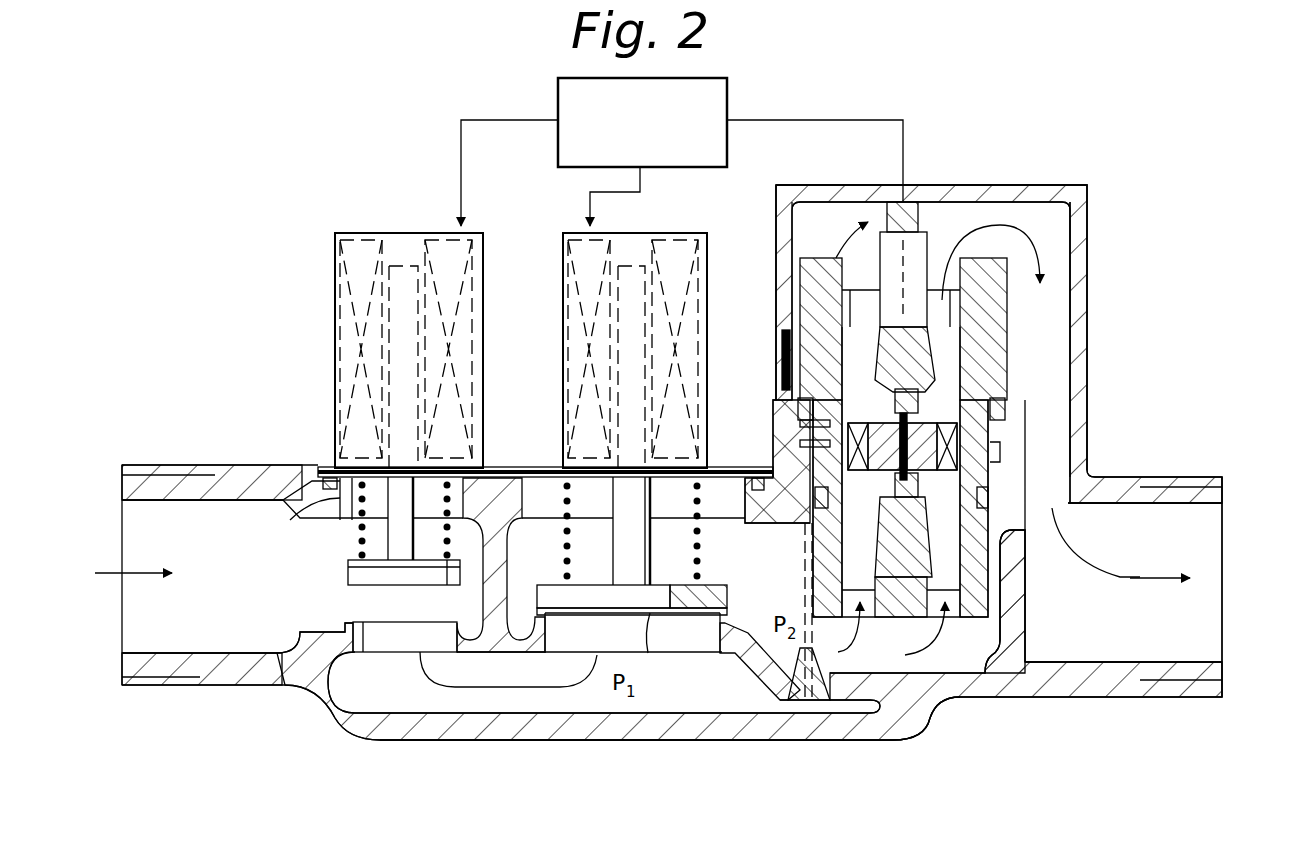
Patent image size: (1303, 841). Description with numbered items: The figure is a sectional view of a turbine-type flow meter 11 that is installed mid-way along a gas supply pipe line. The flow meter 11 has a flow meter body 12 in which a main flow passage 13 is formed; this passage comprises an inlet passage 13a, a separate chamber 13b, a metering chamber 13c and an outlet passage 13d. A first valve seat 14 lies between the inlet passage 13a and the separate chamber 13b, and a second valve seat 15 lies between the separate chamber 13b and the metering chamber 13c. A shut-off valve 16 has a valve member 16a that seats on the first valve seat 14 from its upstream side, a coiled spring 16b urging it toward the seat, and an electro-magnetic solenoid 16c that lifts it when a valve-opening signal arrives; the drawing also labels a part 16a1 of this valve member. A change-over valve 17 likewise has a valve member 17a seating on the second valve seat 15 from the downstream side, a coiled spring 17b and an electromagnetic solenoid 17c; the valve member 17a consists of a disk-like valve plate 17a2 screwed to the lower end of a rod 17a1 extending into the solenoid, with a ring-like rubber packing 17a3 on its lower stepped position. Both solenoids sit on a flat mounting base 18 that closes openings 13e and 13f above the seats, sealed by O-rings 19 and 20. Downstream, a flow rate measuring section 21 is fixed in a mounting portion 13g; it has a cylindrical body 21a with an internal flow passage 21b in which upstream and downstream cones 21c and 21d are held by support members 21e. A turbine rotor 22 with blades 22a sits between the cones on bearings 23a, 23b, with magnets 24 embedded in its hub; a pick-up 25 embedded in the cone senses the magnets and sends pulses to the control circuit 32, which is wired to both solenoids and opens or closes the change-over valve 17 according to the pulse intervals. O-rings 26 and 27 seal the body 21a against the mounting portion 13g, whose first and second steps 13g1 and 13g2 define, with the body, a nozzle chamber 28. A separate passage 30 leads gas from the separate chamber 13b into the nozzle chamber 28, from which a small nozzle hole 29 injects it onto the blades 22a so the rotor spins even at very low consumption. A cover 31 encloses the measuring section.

The flow meter 11 is at (884, 75).
The flow meter body 12 is at (426, 748).
The main flow passage 13 is at (723, 700).
The inlet passage 13a is at (178, 668).
The separate chamber 13b is at (590, 705).
The metering chamber 13c is at (970, 672).
The outlet passage 13d is at (1104, 668).
The opening 13e is at (322, 506).
The opening 13f is at (540, 490).
The mounting portion 13g is at (1090, 430).
The first step 13g1 is at (805, 422).
The second step 13g2 is at (805, 443).
The first valve seat 14 is at (357, 600).
The second valve seat 15 is at (732, 622).
The shut-off valve 16 is at (325, 370).
The valve member 16a is at (348, 576).
The valve plate of plunger 16a1 is at (400, 570).
The coiled spring 16b is at (352, 546).
The electro-magnetic solenoid 16c is at (326, 404).
The change-over valve 17 is at (712, 332).
The valve member 17a is at (645, 640).
The rod 17a1 is at (640, 555).
The valve plate 17a2 is at (600, 596).
The rubber packing 17a3 is at (716, 600).
The coiled spring 17b is at (700, 540).
The electromagnetic solenoid 17c is at (708, 270).
The mounting base 18 is at (490, 475).
The O-ring 19 is at (330, 476).
The O-ring 20 is at (790, 480).
The flow rate measuring section 21 is at (1008, 340).
The cylindrical body 21a is at (990, 314).
The flow passage 21b is at (990, 560).
The upstream cone 21c is at (970, 530).
The downstream cone 21d is at (880, 258).
The support members 21e is at (942, 262).
The turbine rotor 22 is at (868, 500).
The blades 22a is at (786, 368).
The bearing 23a is at (950, 490).
The bearing 23b is at (948, 425).
The magnets 24 is at (920, 400).
The pick-up 25 is at (880, 385).
The O-ring 26 is at (992, 495).
The O-ring 27 is at (1006, 410).
The nozzle chamber 28 is at (1002, 452).
The nozzle hole 29 is at (770, 475).
The separate passage 30 is at (828, 700).
The cover housing 31 is at (1010, 190).
The control circuit 32 is at (730, 97).